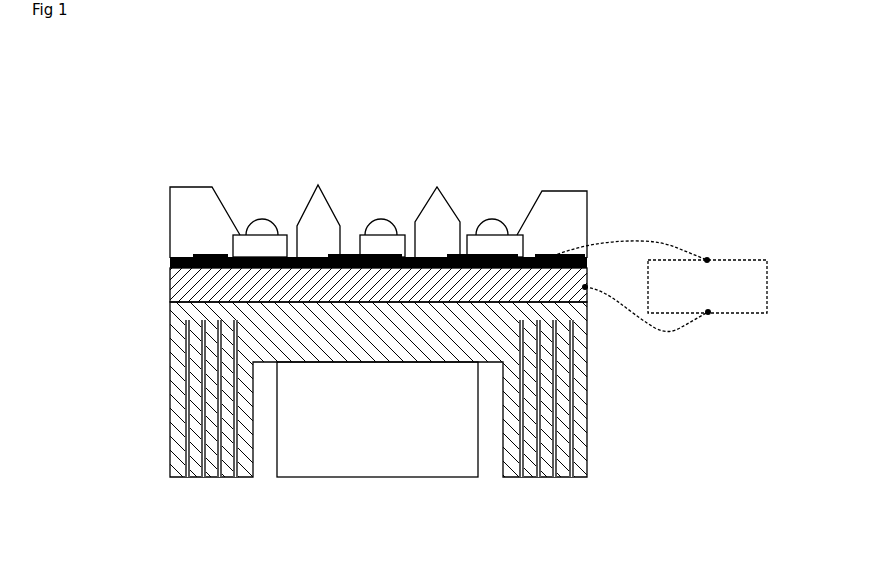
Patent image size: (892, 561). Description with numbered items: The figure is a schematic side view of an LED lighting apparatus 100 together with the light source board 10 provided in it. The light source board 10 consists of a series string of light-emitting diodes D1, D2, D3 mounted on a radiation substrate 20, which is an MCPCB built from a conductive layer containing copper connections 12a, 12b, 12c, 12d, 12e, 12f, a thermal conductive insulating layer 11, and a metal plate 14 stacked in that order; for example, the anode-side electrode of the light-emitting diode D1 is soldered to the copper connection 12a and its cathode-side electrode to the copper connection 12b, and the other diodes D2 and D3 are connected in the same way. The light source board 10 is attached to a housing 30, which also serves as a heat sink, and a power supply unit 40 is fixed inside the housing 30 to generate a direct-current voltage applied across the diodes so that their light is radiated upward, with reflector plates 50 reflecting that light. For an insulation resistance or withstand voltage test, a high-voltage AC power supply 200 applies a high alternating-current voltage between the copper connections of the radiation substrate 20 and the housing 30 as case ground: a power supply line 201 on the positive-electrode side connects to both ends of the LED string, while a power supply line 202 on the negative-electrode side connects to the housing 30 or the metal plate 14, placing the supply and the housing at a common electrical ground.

The LED lighting apparatus 100 is at (110, 102).
The light source board 10 is at (78, 218).
The radiation substrate 20 is at (118, 255).
The thermal conductive insulating layer 11 is at (170, 263).
The metal plate 14 is at (170, 285).
The housing 30 is at (170, 323).
The power supply unit 40 is at (378, 470).
The reflector plates 50 is at (192, 189).
The copper connection 12a is at (228, 257).
The copper connection 12b is at (297, 257).
The copper connection 12c is at (340, 257).
The copper connection 12d is at (415, 257).
The copper connection 12e is at (459, 257).
The copper connection 12f is at (531, 257).
The light-emitting diode D1 is at (266, 211).
The light-emitting diode D2 is at (380, 211).
The light-emitting diode D3 is at (493, 211).
The high-voltage AC power supply 200 is at (743, 257).
The power supply line 201 is at (664, 242).
The power supply line 202 is at (671, 333).